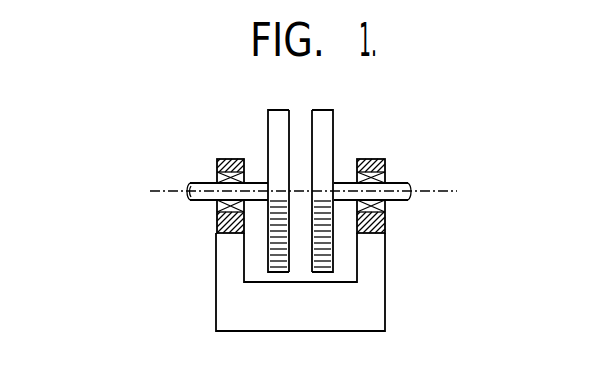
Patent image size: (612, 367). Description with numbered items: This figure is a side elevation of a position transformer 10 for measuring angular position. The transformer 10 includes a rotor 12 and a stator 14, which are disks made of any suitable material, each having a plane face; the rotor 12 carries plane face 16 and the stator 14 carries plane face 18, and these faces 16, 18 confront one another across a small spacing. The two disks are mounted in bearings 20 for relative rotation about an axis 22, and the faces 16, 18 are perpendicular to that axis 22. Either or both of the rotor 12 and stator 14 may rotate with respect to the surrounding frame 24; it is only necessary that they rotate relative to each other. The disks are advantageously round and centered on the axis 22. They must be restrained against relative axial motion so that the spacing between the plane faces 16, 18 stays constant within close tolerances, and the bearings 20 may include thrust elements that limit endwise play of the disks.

The position transformer 10 is at (364, 137).
The rotor 12 is at (262, 106).
The stator 14 is at (334, 104).
The plane face of rotor 16 is at (299, 121).
The plane face of stator 18 is at (312, 128).
The bearings 20 is at (388, 171).
The axis 22 is at (162, 190).
The frame 24 is at (387, 256).